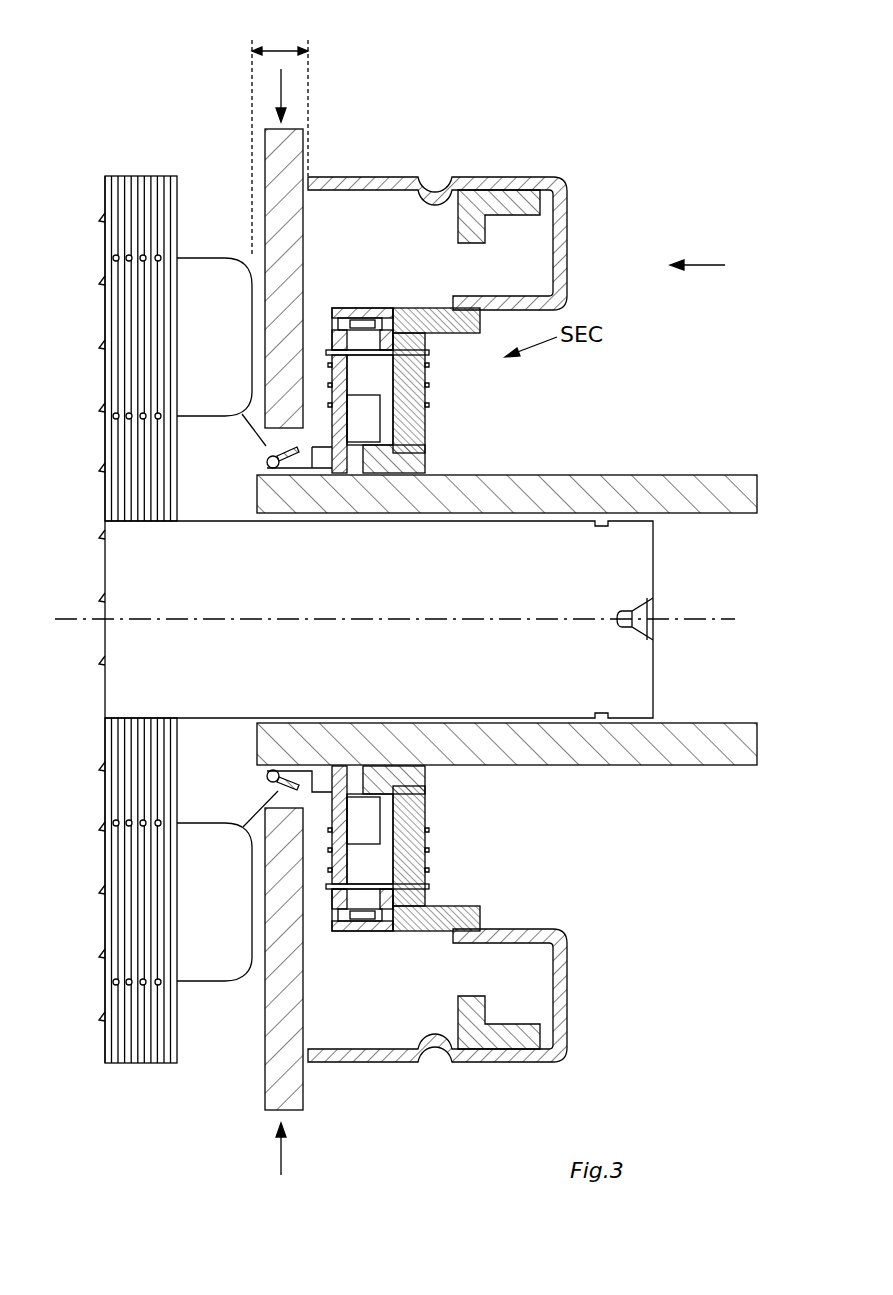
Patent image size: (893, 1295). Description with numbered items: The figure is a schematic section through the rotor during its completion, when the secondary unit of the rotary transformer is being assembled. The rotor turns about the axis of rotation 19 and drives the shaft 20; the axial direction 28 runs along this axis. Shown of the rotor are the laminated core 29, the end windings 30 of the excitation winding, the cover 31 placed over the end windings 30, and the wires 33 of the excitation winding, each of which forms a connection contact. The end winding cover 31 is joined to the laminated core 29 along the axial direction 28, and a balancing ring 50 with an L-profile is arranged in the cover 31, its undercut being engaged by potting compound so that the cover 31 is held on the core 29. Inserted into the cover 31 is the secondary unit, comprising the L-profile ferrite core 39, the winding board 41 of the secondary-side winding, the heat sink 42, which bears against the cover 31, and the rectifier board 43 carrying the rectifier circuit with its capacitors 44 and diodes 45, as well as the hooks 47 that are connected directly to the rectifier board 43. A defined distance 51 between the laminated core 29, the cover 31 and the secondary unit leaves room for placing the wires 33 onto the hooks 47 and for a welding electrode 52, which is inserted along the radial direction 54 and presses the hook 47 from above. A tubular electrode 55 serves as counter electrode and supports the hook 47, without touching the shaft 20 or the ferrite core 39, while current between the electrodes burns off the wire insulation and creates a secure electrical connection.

The axis of rotation 19 is at (71, 626).
The shaft 20 is at (653, 573).
The axial direction 28 is at (700, 265).
The laminated core 29 is at (146, 193).
The end windings 30 is at (204, 323).
The cover 31 is at (482, 177).
The wires 33 is at (257, 823).
The ferrite core 39 is at (427, 917).
The winding board 41 is at (427, 380).
The heat sink 42 is at (372, 917).
The rectifier board 43 is at (330, 908).
The capacitors 44 is at (364, 412).
The diodes 45 is at (330, 866).
The hooks 47 is at (273, 768).
The balancing ring 50 is at (520, 196).
The defined distance 51 is at (290, 50).
The welding electrode 52 is at (296, 262).
The radial direction 54 is at (275, 90).
The tubular electrode 55 is at (603, 493).